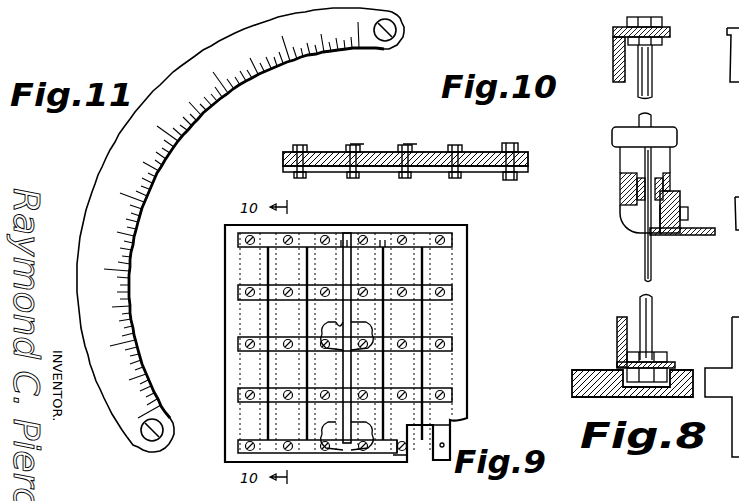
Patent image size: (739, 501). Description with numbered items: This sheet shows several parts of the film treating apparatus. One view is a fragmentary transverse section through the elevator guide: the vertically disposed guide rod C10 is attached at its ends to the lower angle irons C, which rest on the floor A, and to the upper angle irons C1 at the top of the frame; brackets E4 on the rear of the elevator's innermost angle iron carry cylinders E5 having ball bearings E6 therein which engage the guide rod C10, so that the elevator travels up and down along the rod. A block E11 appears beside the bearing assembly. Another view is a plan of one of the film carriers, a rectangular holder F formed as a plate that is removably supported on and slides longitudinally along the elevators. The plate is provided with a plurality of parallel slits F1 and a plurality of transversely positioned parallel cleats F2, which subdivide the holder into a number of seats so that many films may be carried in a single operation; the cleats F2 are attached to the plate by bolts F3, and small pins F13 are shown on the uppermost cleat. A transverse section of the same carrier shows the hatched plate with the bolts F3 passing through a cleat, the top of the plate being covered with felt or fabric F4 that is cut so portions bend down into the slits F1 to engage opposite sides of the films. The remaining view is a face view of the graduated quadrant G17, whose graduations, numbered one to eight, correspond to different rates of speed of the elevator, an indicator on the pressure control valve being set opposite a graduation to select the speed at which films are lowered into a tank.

In FIG. 11, the graduated quadrant G17 is at (177, 97).
In FIG. 10, the holder F is at (423, 160).
In FIG. 9, the holder F is at (452, 272).
In FIG. 9, the slits F1 is at (382, 325).
In FIG. 10, the cleats F2 is at (352, 148).
In FIG. 9, the cleats F2 is at (263, 290).
In FIG. 10, the bolts F3 is at (401, 150).
In FIG. 9, the felt or fabric F4 is at (393, 332).
In FIG. 9, the pins F13 is at (400, 240).
In FIG. 8, the angle irons C is at (617, 347).
In FIG. 8, the angle irons C1 is at (615, 52).
In FIG. 8, the guide rod C10 is at (640, 116).
In FIG. 8, the cylinders E5 is at (661, 156).
In FIG. 8, the ball bearings E6 is at (667, 174).
In FIG. 8, the side block E11 is at (698, 230).
In FIG. 8, the brackets E4 is at (632, 217).
In FIG. 8, the floor A is at (600, 387).